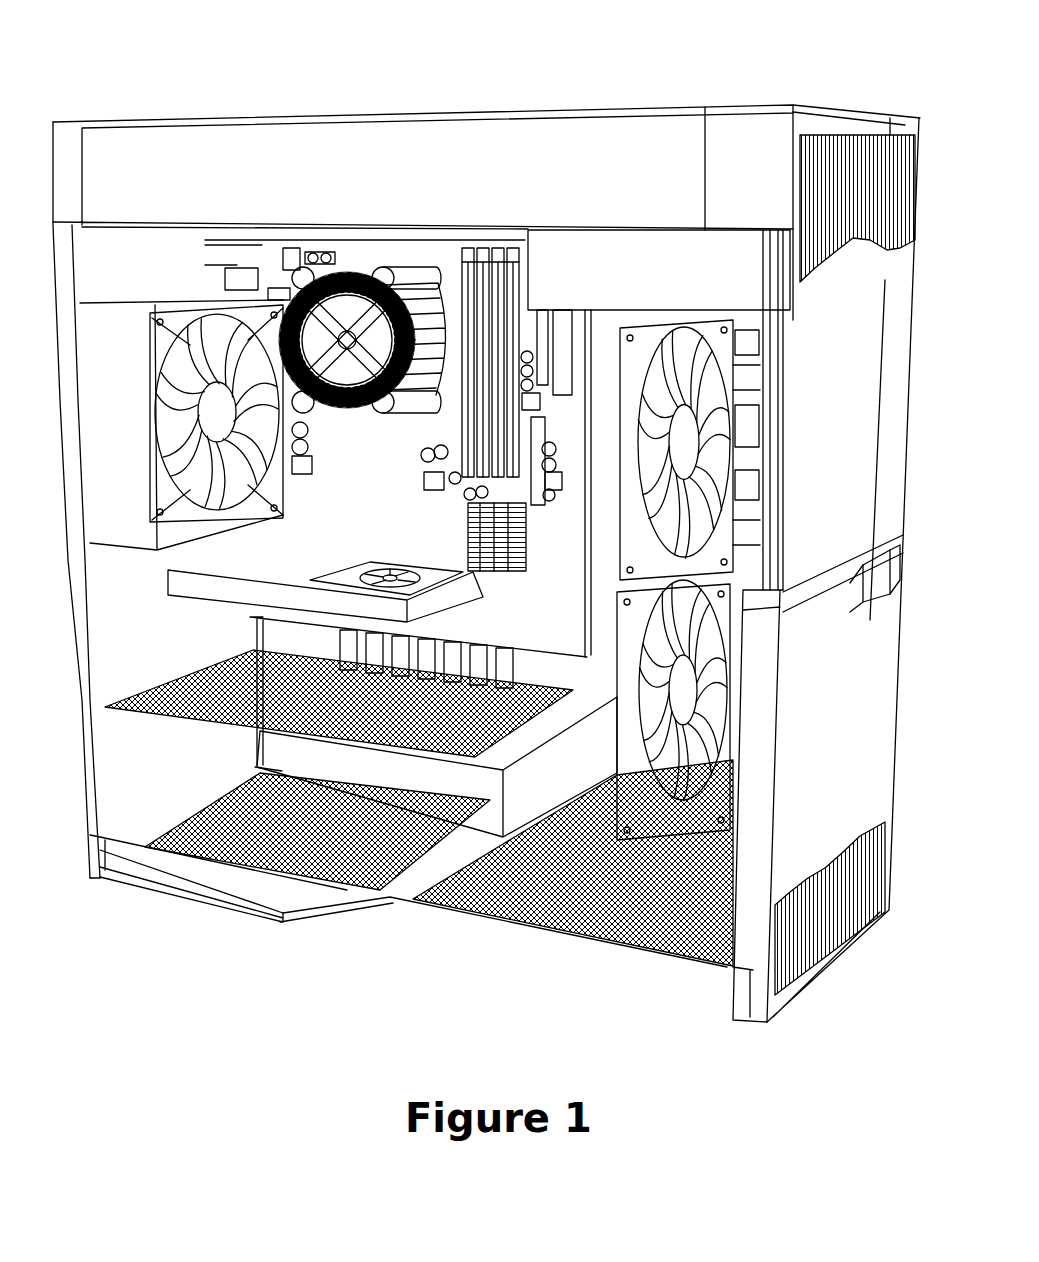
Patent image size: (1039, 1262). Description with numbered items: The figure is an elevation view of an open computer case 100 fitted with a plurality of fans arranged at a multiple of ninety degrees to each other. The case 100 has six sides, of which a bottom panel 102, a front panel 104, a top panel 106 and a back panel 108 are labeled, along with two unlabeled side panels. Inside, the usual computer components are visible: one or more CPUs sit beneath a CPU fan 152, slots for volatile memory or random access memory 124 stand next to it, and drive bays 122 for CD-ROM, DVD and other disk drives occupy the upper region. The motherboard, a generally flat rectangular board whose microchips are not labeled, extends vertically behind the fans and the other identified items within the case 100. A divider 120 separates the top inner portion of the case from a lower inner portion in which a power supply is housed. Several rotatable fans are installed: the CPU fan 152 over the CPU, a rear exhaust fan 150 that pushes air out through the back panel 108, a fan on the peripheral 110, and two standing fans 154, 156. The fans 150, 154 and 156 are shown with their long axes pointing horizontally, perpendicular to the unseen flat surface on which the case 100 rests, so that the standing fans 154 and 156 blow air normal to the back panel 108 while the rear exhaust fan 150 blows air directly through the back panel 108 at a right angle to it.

The computer case 100 is at (807, 980).
The bottom panel 102 is at (390, 883).
The front panel 104 is at (848, 280).
The top panel 106 is at (420, 113).
The back panel 108 is at (120, 780).
The peripheral 110 is at (212, 582).
The divider 120 is at (137, 695).
The drive bays 122 is at (567, 257).
The slots for volatile memory/random access memory 124 is at (485, 257).
The rear exhaust fan 150 is at (233, 300).
The CPU fan 152 is at (372, 278).
The standing fan 154 is at (648, 345).
The standing fan 156 is at (627, 780).